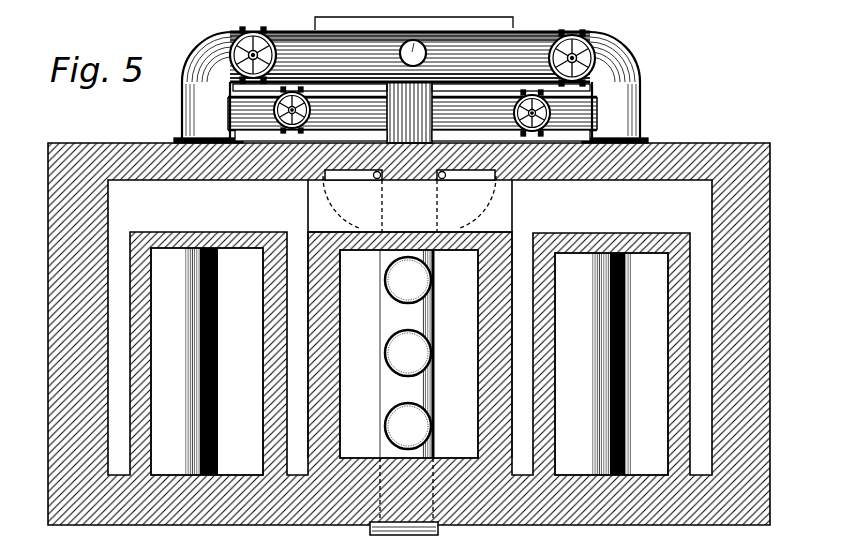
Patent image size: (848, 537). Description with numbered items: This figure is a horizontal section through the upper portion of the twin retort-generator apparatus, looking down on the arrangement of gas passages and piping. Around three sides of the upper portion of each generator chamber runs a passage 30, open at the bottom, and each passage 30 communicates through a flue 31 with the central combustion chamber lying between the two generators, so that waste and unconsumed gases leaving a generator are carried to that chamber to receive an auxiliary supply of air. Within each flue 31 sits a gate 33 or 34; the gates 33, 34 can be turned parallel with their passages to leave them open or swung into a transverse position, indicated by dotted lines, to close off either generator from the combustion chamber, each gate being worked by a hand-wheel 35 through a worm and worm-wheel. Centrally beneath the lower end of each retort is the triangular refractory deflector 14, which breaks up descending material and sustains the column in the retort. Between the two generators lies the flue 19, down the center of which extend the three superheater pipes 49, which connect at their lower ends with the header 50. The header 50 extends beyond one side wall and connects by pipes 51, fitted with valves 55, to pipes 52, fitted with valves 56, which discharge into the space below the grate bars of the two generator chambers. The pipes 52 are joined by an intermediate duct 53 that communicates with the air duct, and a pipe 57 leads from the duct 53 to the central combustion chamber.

The deflector 14 is at (192, 420).
The flue 19 is at (409, 361).
The passage 30 is at (112, 418).
The flue 31 is at (317, 217).
The gate 33 is at (356, 181).
The gate 34 is at (465, 180).
The hand-wheel 35 is at (372, 139).
The superheater pipes 49 is at (390, 402).
The header 50 is at (432, 320).
The pipes 51 is at (257, 120).
The pipes 52 is at (183, 113).
The intermediate duct 53 is at (303, 31).
The valves 55 is at (288, 130).
The valves 56 is at (254, 32).
The pipe 57 is at (415, 45).